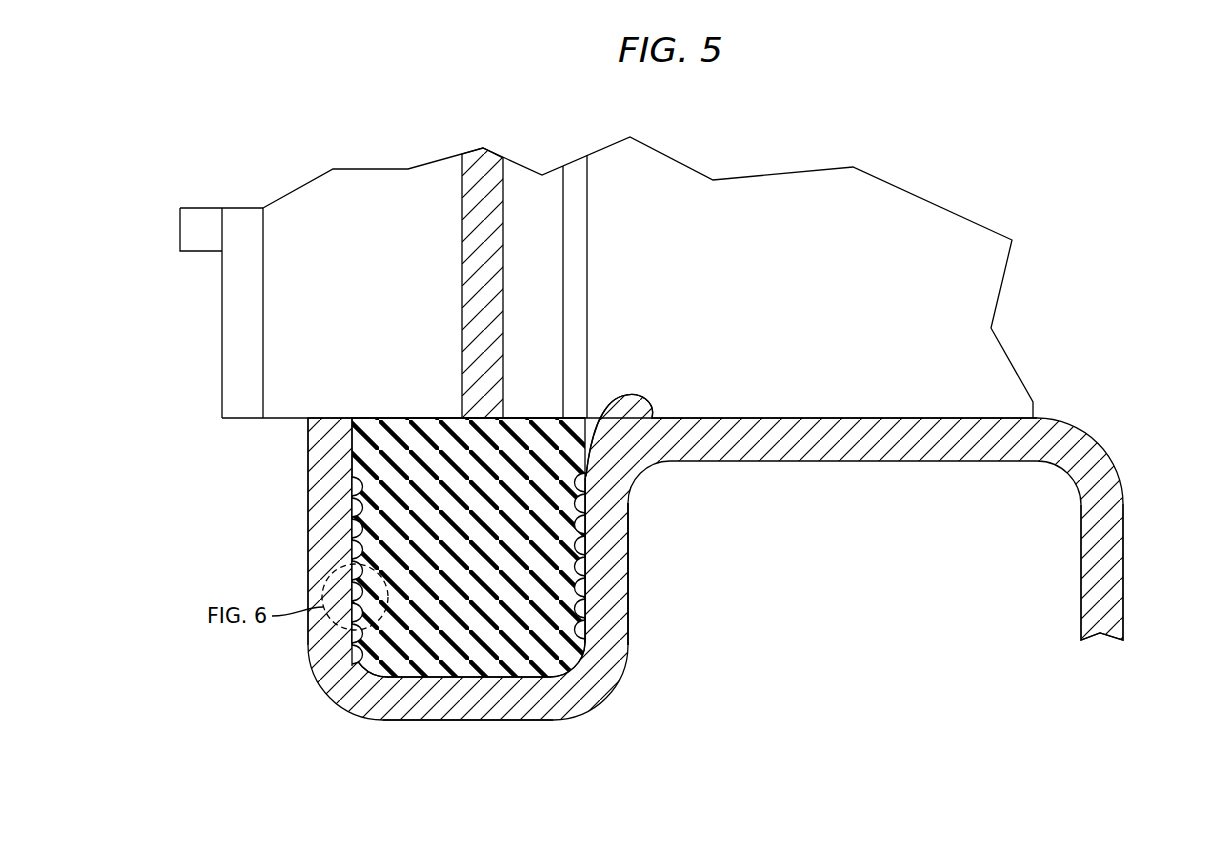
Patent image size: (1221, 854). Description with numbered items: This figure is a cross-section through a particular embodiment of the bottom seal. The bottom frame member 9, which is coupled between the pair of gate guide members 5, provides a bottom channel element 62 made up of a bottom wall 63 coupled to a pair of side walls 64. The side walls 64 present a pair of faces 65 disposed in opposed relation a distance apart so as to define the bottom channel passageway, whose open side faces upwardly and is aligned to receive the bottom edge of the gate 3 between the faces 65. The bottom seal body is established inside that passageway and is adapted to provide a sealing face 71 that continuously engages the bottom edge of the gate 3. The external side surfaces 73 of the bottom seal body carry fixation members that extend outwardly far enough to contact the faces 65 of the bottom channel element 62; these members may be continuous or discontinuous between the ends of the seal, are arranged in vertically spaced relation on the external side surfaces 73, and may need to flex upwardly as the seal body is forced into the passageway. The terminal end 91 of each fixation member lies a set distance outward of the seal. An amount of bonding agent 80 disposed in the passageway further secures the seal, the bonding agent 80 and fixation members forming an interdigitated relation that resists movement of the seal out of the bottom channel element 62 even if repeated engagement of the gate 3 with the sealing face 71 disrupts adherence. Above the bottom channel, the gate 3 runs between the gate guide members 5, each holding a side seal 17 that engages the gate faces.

The gate guide member 5 is at (332, 160).
The side seal 17 is at (373, 288).
The gate 3 is at (517, 283).
The sealing face 71 is at (542, 417).
The bonding agent 80 is at (620, 410).
The bottom frame member 9 is at (706, 559).
The faces 65 is at (352, 540).
The side walls 64 is at (328, 510).
The external side surface 73 is at (583, 583).
The bottom channel element 62 is at (640, 652).
The bottom wall 63 is at (463, 695).
The terminal end 91 is at (1123, 555).